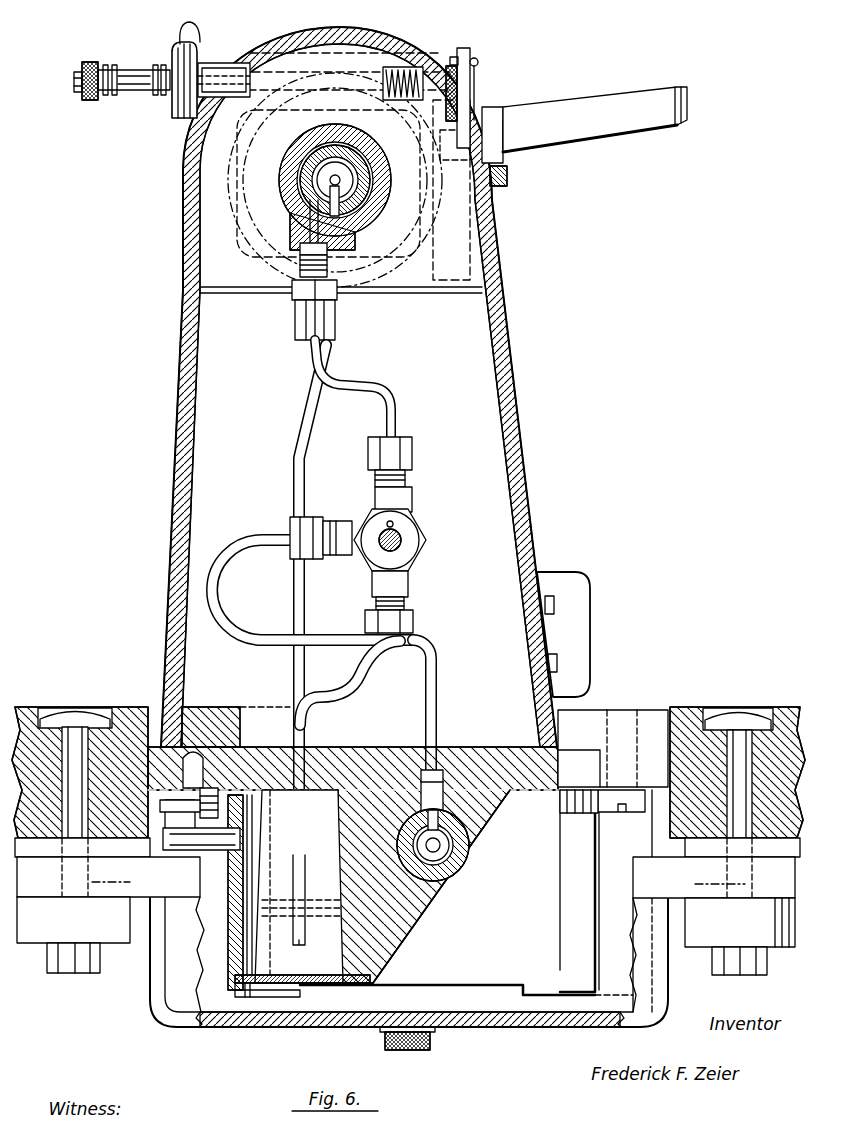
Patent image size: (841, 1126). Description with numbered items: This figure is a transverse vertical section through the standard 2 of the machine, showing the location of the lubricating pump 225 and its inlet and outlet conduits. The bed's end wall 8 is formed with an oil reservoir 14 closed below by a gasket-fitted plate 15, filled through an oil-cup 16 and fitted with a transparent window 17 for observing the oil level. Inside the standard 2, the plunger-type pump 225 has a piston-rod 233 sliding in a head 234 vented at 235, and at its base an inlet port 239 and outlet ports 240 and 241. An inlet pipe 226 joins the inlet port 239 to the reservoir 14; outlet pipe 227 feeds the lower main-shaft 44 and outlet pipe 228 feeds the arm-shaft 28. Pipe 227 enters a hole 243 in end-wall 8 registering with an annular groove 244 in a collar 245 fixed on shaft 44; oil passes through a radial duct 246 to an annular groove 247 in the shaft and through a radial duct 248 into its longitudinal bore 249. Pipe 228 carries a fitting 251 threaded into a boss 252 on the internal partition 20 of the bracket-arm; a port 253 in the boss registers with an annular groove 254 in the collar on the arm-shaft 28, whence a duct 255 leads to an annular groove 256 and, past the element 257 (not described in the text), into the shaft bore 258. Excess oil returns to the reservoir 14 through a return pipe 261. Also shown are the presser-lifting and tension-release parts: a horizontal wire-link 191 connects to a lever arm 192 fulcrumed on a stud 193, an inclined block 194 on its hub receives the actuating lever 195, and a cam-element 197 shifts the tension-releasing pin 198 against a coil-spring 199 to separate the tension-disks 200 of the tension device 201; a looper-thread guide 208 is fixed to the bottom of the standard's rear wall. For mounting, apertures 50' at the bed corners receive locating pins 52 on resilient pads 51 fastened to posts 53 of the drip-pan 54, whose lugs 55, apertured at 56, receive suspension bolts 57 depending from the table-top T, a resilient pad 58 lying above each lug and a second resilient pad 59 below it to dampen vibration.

The standard 2 is at (516, 431).
The end wall 8 is at (470, 983).
The oil reservoir 14 is at (299, 886).
The gasket-fitted plate 15 is at (260, 984).
The oil-cup 16 is at (196, 852).
The transparent window 17 is at (228, 893).
The internal partition 20 is at (466, 291).
The arm-shaft 28 is at (330, 181).
The lower main-shaft 44 is at (432, 903).
The apertures 50' is at (347, 828).
The resilient pads 51 is at (210, 792).
The locating pins 52 is at (193, 752).
The posts 53 is at (158, 840).
The drip-pan 54 is at (298, 1029).
The lugs 55 is at (35, 920).
The apertures 56 is at (418, 884).
The suspension bolts 57 is at (72, 712).
The resilient pad 58 is at (40, 845).
The second resilient pad 59 is at (48, 946).
The table-top T is at (116, 712).
The horizontal wire-link 191 is at (478, 58).
The lever arm 192 is at (470, 82).
The stud 193 is at (466, 165).
The inclined block 194 is at (496, 108).
The actuating lever 195 is at (598, 108).
The cam-element 197 is at (486, 70).
The tension-releasing pin 198 is at (273, 64).
The coil-spring 199 is at (401, 101).
The tension-disks 200 is at (174, 56).
The tension device 201 is at (124, 70).
The thread-guide 208 is at (578, 640).
The pump 225 is at (382, 535).
The inlet pipe 226 is at (326, 694).
The outlet pipe 227 is at (437, 661).
The outlet pipe 228 is at (388, 395).
The piston-rod 233 is at (382, 551).
The head 234 is at (376, 530).
The vent 235 is at (393, 520).
The inlet port 239 is at (378, 590).
The outlet port 240 is at (384, 490).
The outlet port 241 is at (344, 558).
The hole 243 is at (420, 770).
The annular groove 244 is at (455, 835).
The rotatable collar 245 is at (452, 845).
The radial duct 246 is at (465, 828).
The annular groove 247 is at (458, 868).
The radial duct 248 is at (448, 855).
The longitudinal bore 249 is at (424, 853).
The fitting 251 is at (288, 345).
The boss 252 is at (305, 250).
The port 253 is at (312, 224).
The annular groove 254 is at (340, 215).
The duct 255 is at (345, 205).
The annular groove 256 is at (316, 172).
The ring 257 is at (325, 190).
The bore 258 is at (332, 181).
The return pipe 261 is at (293, 471).